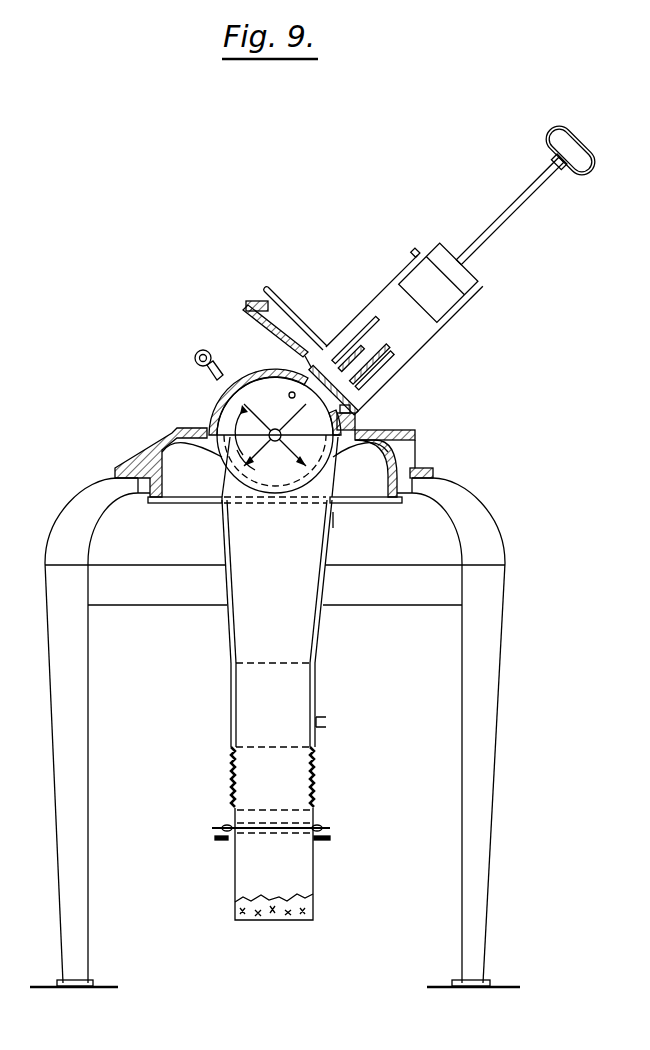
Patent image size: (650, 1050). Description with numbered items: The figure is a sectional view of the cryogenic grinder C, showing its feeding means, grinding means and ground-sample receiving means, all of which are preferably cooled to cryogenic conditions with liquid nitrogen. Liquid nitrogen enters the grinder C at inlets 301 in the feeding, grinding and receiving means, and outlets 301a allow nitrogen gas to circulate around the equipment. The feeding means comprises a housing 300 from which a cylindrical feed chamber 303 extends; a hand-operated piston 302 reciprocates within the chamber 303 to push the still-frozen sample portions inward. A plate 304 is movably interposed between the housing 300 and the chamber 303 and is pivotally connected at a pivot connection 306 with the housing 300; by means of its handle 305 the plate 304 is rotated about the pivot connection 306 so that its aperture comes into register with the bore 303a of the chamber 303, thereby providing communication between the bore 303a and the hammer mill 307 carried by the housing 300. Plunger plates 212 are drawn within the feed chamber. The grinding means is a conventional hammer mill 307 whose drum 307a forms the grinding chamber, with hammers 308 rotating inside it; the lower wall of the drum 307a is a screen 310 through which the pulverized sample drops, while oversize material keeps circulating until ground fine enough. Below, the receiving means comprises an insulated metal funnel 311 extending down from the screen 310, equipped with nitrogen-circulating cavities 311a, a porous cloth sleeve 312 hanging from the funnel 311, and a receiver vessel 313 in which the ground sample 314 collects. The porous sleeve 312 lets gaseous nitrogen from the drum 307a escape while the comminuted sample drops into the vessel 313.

The grinder C is at (517, 563).
The plunger plates 212 is at (382, 372).
The housing 300 is at (250, 356).
The inlets 301 is at (428, 245).
The outlets 301a is at (378, 397).
The hand-operated piston 302 is at (436, 314).
The cylindrical feed chamber 303 is at (390, 383).
The bore 303a is at (405, 322).
The plate 304 is at (330, 345).
The handle 305 is at (268, 296).
The pivot connection 306 is at (362, 422).
The hammer mill 307 is at (170, 452).
The drum 307a is at (226, 414).
The hammers 308 is at (380, 452).
The screen 310 is at (253, 487).
The insulated metal funnel 311 is at (228, 650).
The nitrogen-circulating cavities 311a is at (314, 633).
The porous cloth sleeve 312 is at (314, 778).
The receiver vessel 313 is at (314, 865).
The ground sample 314 is at (312, 900).